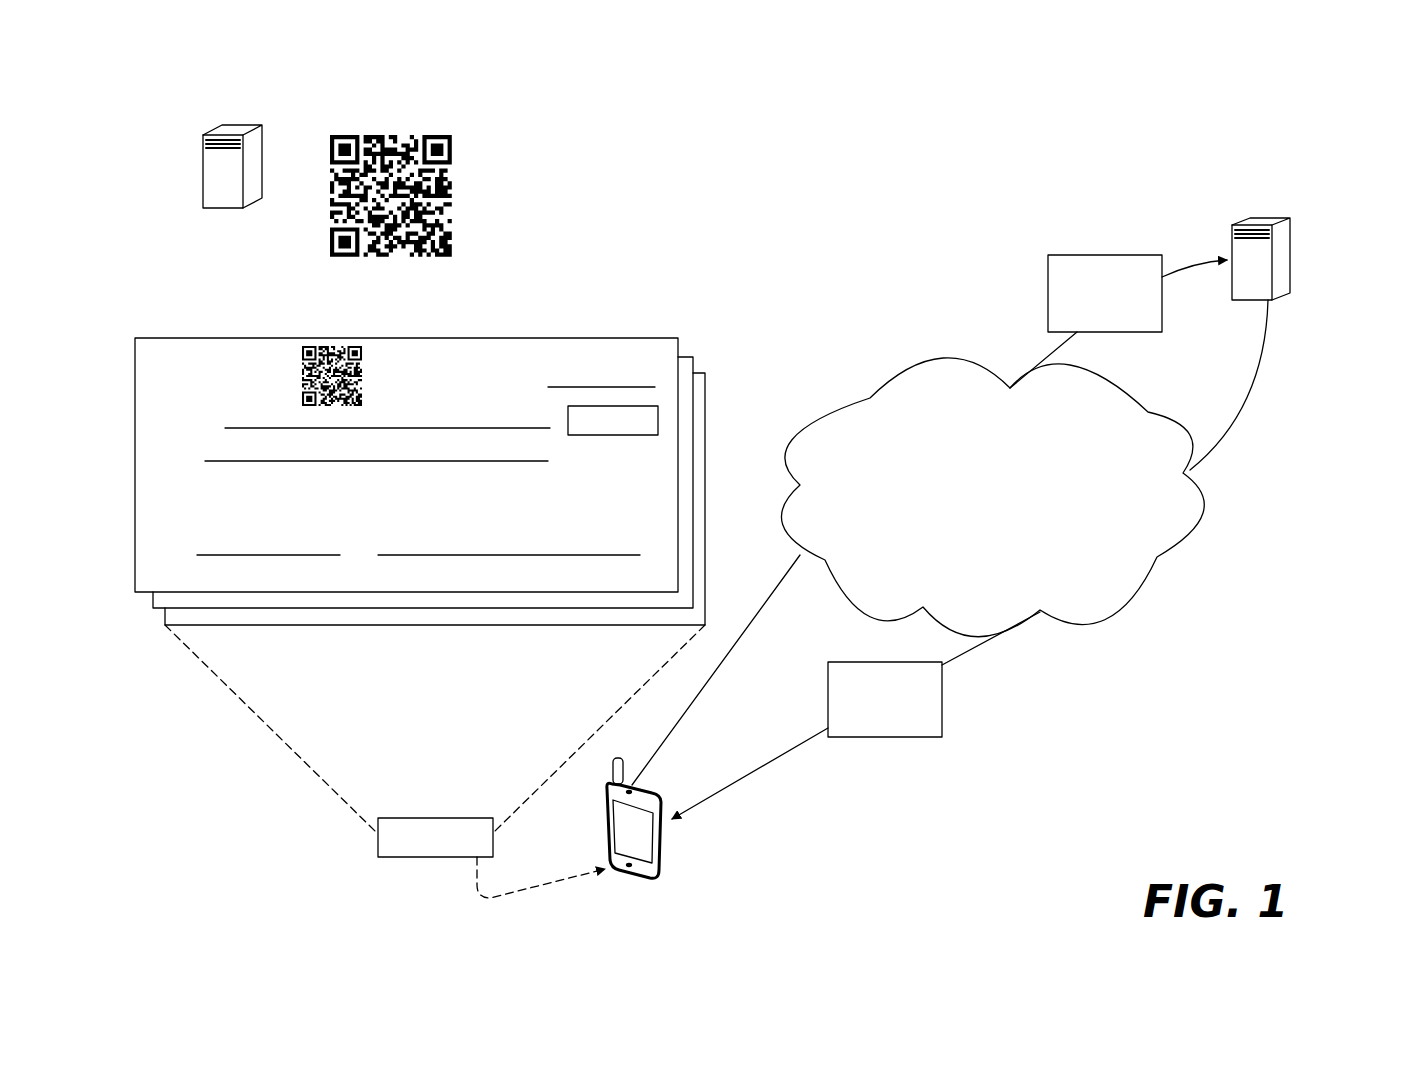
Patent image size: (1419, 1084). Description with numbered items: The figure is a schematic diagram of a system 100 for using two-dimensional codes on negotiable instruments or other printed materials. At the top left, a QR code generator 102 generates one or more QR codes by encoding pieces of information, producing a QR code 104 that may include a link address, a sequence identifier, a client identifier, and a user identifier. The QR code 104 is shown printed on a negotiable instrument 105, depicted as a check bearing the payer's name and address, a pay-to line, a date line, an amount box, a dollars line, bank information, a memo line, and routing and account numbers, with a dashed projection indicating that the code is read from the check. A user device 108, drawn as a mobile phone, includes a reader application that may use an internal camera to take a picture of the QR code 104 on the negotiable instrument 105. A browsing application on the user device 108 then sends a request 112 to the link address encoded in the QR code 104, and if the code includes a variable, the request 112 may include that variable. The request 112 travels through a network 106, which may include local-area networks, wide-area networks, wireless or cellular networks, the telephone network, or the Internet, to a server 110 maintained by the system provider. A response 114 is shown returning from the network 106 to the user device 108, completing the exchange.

The system 100 is at (783, 143).
The QR code generator 102 is at (230, 125).
The QR code 104 is at (393, 135).
The negotiable instrument 105 is at (455, 338).
The network 106 is at (1115, 625).
The user device 108 is at (605, 808).
The server 110 is at (1282, 218).
The request 112 is at (1055, 255).
The response 114 is at (932, 737).